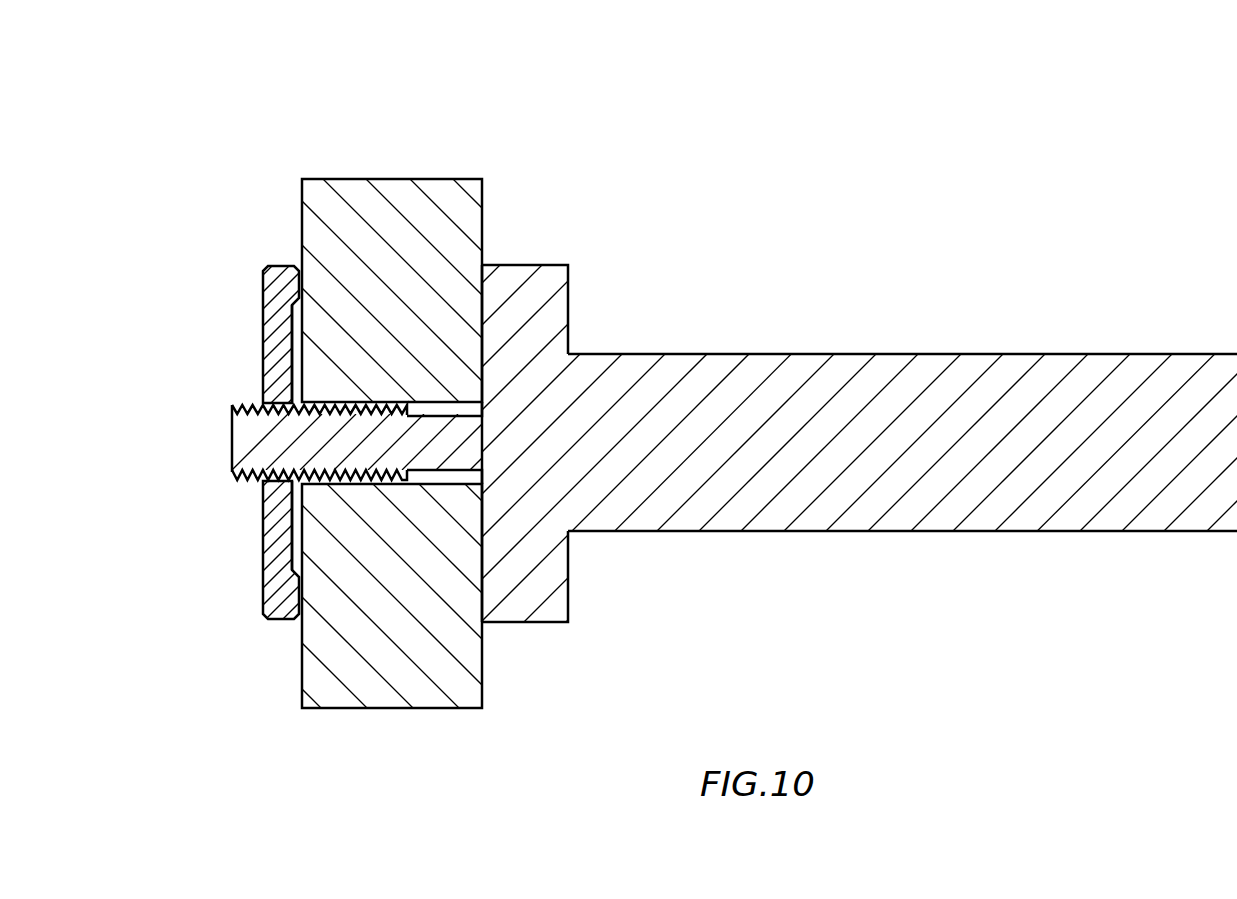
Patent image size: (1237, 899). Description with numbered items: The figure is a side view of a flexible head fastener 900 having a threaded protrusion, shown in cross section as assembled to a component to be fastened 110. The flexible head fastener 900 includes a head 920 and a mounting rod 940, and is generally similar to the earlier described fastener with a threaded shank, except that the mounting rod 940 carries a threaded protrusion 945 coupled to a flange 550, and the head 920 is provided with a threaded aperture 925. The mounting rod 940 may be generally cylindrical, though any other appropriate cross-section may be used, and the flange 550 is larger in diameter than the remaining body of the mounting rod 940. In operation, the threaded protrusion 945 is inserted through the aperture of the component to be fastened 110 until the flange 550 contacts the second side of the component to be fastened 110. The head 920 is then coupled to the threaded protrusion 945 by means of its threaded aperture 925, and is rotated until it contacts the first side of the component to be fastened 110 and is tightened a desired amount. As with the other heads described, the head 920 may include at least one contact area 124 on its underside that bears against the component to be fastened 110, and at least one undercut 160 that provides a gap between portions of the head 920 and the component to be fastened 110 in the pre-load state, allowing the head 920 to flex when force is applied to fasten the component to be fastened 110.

The flexible head fastener 900 is at (170, 95).
The component to be fastened 110 is at (322, 202).
The contact area 124 is at (302, 283).
The head 920 is at (277, 332).
The threaded aperture 925 is at (263, 407).
The undercut 160 is at (297, 517).
The threaded protrusion 945 is at (412, 453).
The flange 550 is at (552, 577).
The mounting rod 940 is at (777, 515).